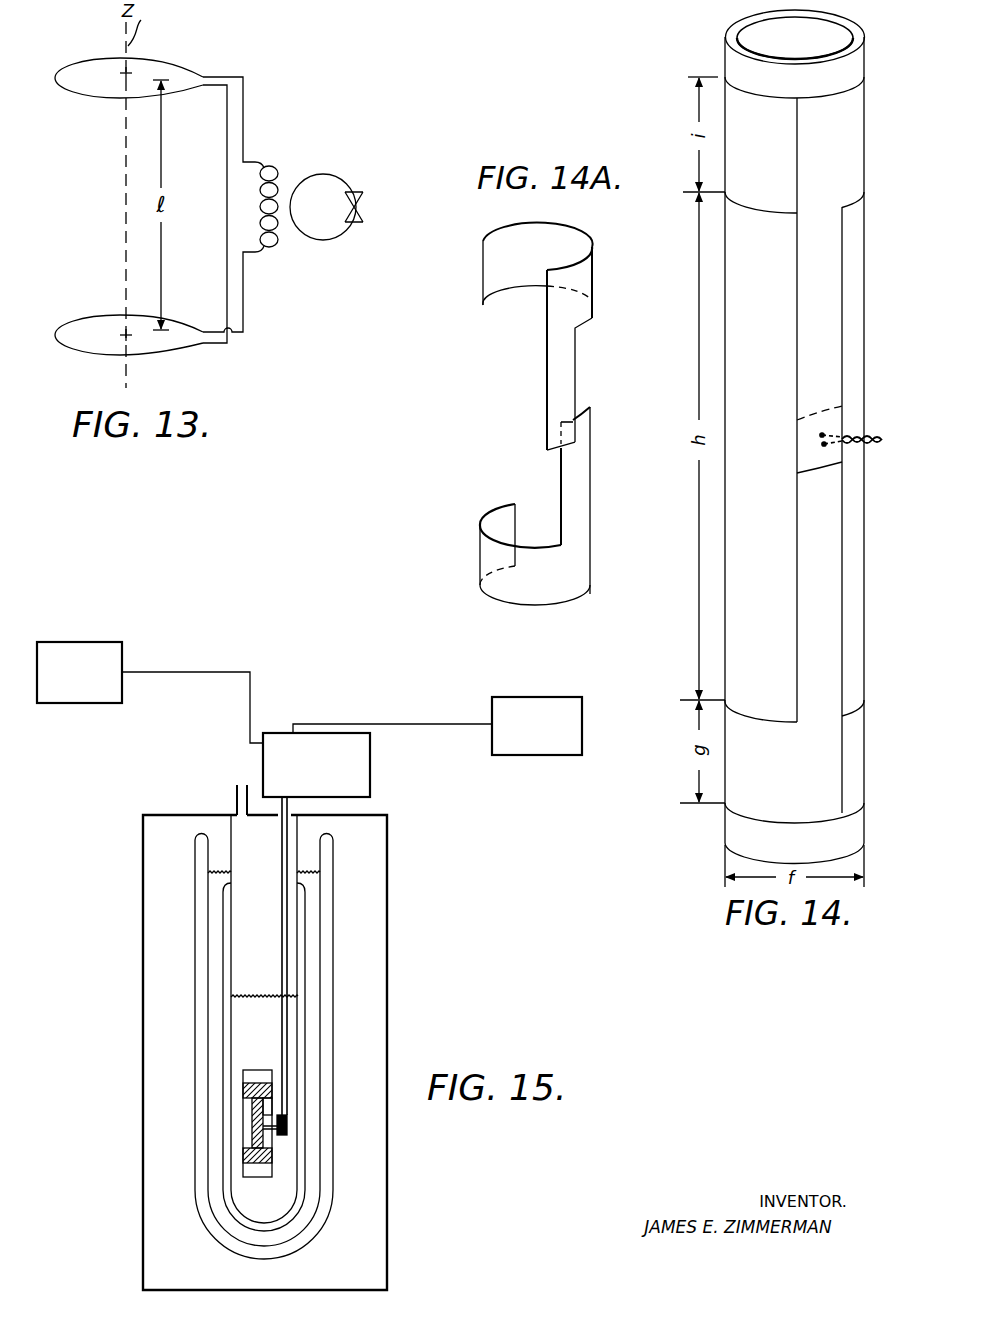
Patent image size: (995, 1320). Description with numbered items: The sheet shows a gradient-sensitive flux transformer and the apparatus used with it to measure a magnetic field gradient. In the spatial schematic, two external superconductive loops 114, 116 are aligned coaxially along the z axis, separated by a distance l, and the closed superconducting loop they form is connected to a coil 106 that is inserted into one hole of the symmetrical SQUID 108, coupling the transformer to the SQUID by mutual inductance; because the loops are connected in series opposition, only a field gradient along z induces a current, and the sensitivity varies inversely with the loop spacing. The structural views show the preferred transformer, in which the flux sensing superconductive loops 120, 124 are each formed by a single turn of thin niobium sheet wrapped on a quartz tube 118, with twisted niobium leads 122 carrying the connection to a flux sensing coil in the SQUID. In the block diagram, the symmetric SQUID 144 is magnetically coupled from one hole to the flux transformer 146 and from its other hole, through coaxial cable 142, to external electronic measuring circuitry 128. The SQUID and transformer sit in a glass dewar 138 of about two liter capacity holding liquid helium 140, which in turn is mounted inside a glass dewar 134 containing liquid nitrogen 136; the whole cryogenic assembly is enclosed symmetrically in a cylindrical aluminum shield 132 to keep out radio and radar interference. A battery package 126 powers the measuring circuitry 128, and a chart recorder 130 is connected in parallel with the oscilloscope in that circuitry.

In FIG. 13, the coil 106 is at (277, 173).
In FIG. 13, the symmetrical SQUID 108 is at (333, 185).
In FIG. 13, the external superconductive loop 114 is at (80, 72).
In FIG. 13, the external superconductive loop 116 is at (75, 330).
In FIG. 14, the quartz tube 118 is at (758, 33).
In FIG. 14A, the flux sensing superconductive loop 120 is at (588, 279).
In FIG. 14, the flux sensing superconductive loop 120 is at (866, 97).
In FIG. 14, the twisted niobium leads 122 is at (883, 446).
In FIG. 14A, the flux sensing superconductive loop 124 is at (550, 598).
In FIG. 14, the flux sensing superconductive loop 124 is at (862, 728).
In FIG. 15, the battery package 126 is at (122, 643).
In FIG. 15, the electronic measuring circuitry 128 is at (277, 733).
In FIG. 15, the chart recorder 130 is at (492, 755).
In FIG. 15, the cylindrical aluminum shield 132 is at (155, 815).
In FIG. 15, the glass dewar 134 is at (201, 832).
In FIG. 15, the liquid nitrogen 136 is at (221, 873).
In FIG. 15, the glass dewar 138 is at (223, 917).
In FIG. 15, the liquid helium 140 is at (253, 993).
In FIG. 15, the coaxial cable 142 is at (282, 1052).
In FIG. 15, the symmetric SQUID 144 is at (282, 1137).
In FIG. 15, the flux transformer 146 is at (265, 1177).